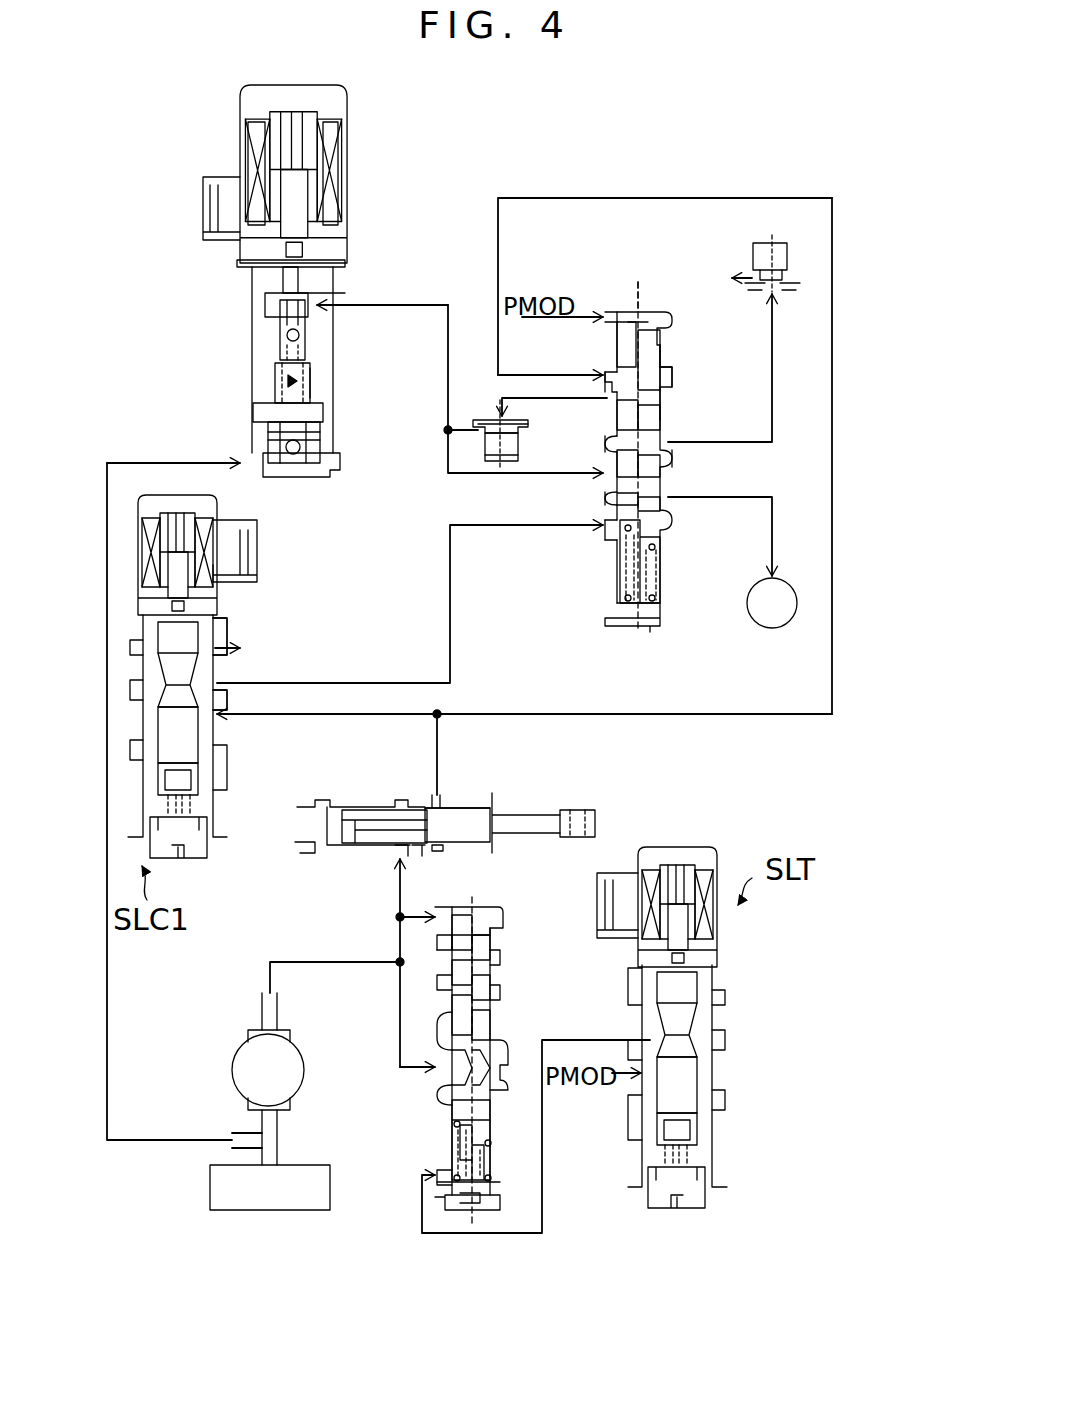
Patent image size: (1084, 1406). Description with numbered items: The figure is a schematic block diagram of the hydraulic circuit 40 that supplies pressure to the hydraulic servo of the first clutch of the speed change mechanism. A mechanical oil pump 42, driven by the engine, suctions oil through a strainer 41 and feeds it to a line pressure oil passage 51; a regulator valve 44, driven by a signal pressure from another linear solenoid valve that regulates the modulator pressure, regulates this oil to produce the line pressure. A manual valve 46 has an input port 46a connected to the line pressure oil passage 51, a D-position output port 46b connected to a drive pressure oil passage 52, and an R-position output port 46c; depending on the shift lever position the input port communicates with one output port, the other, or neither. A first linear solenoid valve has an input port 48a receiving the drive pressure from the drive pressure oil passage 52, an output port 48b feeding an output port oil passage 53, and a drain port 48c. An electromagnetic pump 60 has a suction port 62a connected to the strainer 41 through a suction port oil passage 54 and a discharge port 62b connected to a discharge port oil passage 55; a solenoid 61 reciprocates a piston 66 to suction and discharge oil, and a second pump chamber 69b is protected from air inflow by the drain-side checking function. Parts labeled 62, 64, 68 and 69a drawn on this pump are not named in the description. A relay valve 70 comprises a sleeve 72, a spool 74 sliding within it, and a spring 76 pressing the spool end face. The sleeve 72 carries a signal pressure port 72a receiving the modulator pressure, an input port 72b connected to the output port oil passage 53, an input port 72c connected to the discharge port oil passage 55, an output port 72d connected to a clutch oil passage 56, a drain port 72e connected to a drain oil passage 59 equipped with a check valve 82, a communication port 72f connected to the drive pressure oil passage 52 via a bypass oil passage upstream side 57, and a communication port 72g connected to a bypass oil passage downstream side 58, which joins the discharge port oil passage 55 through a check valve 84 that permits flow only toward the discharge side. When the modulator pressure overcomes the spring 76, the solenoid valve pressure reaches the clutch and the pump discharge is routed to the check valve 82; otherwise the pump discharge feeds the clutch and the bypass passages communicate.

The hydraulic circuit 40 is at (617, 158).
The strainer 41 is at (305, 1165).
The mechanical oil pump 42 is at (295, 1040).
The regulator valve 44 is at (512, 905).
The manual valve 46 is at (300, 793).
The input port 46a is at (395, 854).
The D-position output port 46b is at (440, 796).
The R-position output port 46c is at (313, 850).
The input port 48a is at (220, 735).
The output port 48b is at (218, 672).
The drain port 48c is at (218, 628).
The line pressure oil passage 51 is at (398, 910).
The drive pressure oil passage 52 is at (442, 745).
The output port oil passage 53 is at (450, 600).
The suction port oil passage 54 is at (135, 1140).
The discharge port oil passage 55 is at (446, 362).
The C1 oil passage 56 is at (758, 497).
The bypass oil passage upstream side 57 is at (835, 405).
The bypass oil passage downstream side 58 is at (572, 397).
The drain oil passage 59 is at (770, 390).
The electromagnetic pump 60 is at (365, 125).
The solenoid 61 is at (348, 197).
The pressure regulating valve portion 62 is at (270, 280).
The suction port 62a is at (242, 452).
The discharge port 62b is at (345, 291).
The check valve 64 is at (325, 445).
The piston 66 is at (280, 328).
The shaft 68 is at (312, 378).
The communication hole 69a is at (285, 379).
The second pump chamber 69b is at (320, 316).
The C1 relay valve 70 is at (653, 297).
The sleeve 72 is at (623, 309).
The signal pressure port 72a is at (612, 330).
The input port 72b is at (613, 532).
The input port 72c is at (610, 463).
The output port 72d is at (663, 488).
The drain port 72e is at (667, 432).
The communication port 72f is at (613, 358).
The communication port 72g is at (612, 412).
The spool 74 is at (660, 355).
The spring 76 is at (653, 560).
The check valve 82 is at (745, 252).
The check valve 84 is at (481, 412).